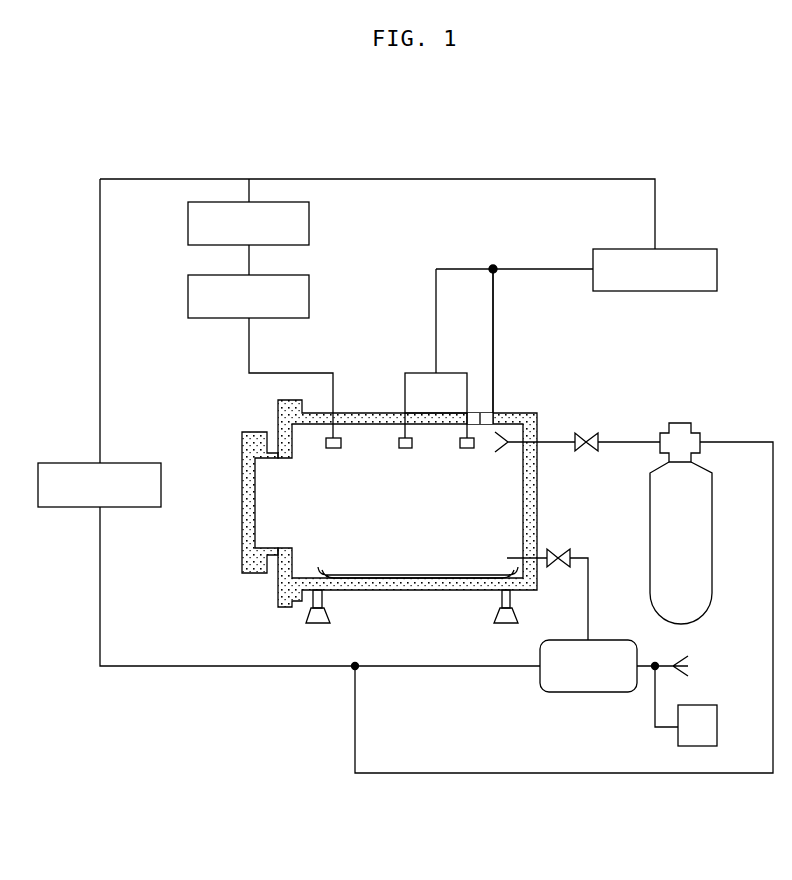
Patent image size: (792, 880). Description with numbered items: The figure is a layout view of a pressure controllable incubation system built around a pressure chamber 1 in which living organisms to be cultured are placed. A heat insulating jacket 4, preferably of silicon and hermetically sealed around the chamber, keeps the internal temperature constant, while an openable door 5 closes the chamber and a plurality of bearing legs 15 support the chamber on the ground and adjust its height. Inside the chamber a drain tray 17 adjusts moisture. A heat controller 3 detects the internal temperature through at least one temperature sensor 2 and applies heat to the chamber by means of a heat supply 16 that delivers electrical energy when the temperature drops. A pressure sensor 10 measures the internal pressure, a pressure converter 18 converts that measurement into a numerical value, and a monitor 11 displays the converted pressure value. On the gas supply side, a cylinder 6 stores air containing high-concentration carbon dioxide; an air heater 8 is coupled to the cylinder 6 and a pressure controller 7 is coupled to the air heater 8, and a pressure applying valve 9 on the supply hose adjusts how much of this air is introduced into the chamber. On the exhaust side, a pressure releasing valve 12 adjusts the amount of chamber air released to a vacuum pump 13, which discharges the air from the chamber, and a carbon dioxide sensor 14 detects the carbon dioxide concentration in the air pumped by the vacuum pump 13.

The pressure chamber 1 is at (248, 413).
The temperature sensor 2 is at (405, 448).
The heat controller 3 is at (683, 248).
The heat insulating jacket 4 is at (377, 412).
The door 5 is at (242, 540).
The cylinder 6 is at (706, 612).
The pressure controller 7 is at (682, 423).
The air heater 8 is at (697, 430).
The pressure applying valve 9 is at (590, 433).
The pressure sensor 10 is at (333, 449).
The monitor 11 is at (272, 202).
The pressure releasing valve 12 is at (553, 551).
The vacuum pump 13 is at (583, 692).
The carbon dioxide sensor 14 is at (698, 746).
The bearing legs 15 is at (306, 618).
The heat supply 16 is at (493, 345).
The drain tray 17 is at (400, 573).
The pressure converter 18 is at (309, 295).